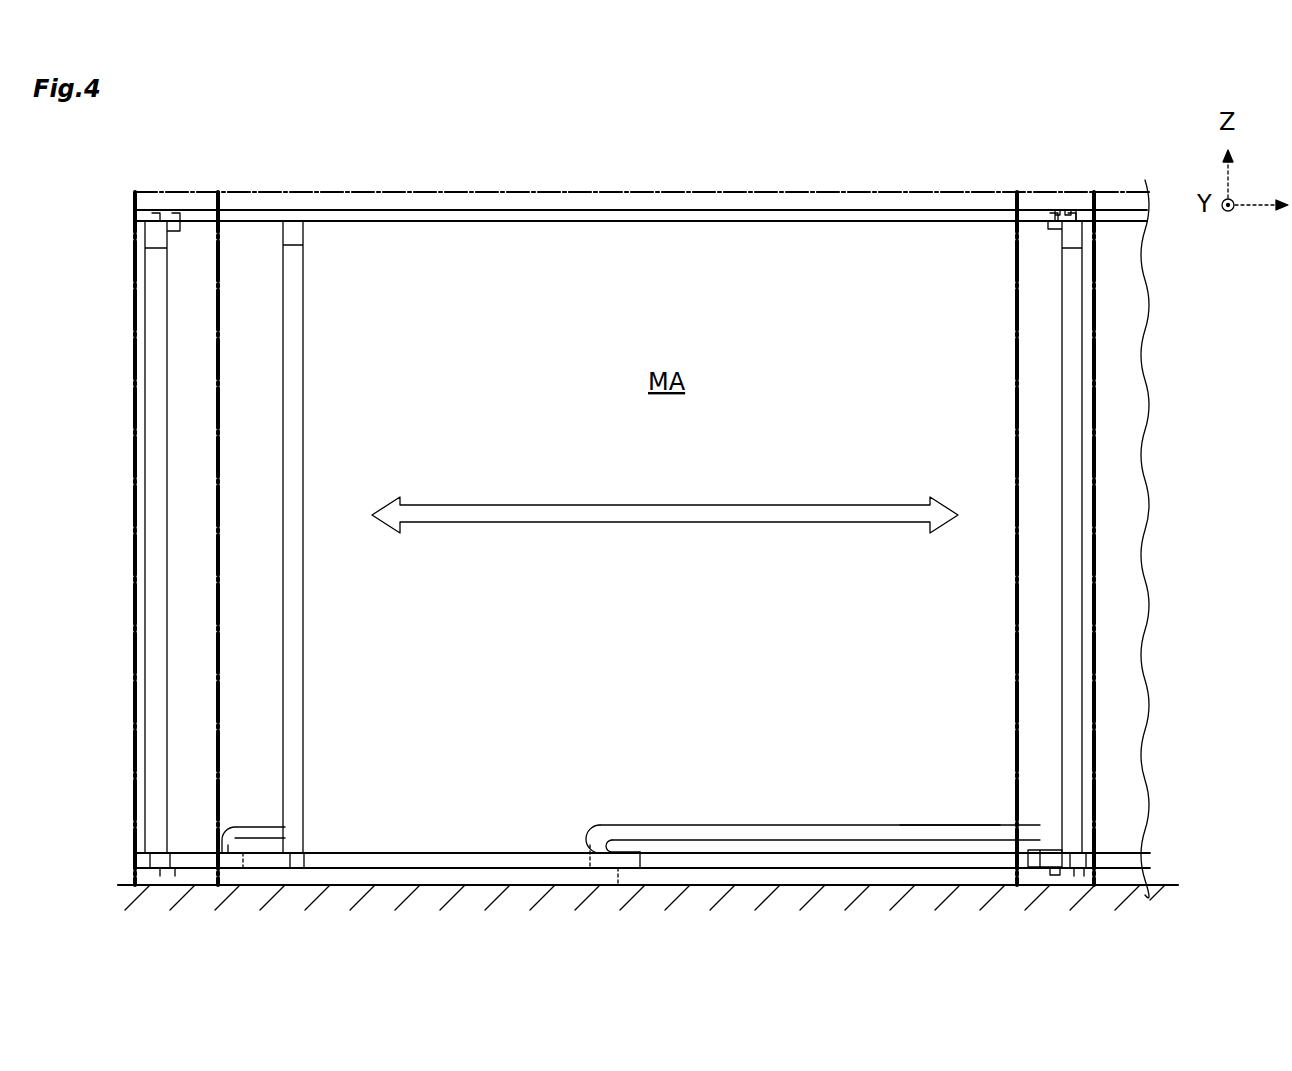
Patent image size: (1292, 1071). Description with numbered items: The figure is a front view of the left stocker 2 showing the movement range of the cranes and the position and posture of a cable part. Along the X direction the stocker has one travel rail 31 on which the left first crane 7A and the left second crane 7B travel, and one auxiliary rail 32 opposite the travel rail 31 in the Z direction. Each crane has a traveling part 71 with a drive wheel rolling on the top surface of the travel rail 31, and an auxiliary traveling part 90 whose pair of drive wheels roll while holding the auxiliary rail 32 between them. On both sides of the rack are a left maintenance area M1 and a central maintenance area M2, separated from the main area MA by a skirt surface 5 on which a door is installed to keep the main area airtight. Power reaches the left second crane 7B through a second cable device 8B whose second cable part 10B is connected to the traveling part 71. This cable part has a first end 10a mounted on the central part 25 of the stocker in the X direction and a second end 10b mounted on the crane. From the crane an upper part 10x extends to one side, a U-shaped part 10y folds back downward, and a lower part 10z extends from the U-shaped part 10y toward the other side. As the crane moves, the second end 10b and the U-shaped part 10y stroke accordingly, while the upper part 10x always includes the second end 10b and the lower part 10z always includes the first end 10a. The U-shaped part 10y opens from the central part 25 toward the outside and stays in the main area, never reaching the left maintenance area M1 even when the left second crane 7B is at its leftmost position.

The left stocker 2 is at (862, 186).
The auxiliary rail 32 is at (774, 210).
The travel rail 31 is at (860, 870).
The auxiliary traveling part 90 is at (1072, 212).
The left first stacker crane 7A is at (133, 822).
The left second stacker crane 7B is at (312, 793).
The skirt surface 5 is at (222, 412).
The left maintenance area M1 is at (186, 322).
The central maintenance area M2 is at (1044, 321).
The upper part 10x is at (718, 828).
The U-shaped part 10y is at (592, 846).
The lower part 10z is at (616, 871).
The first end 10a is at (630, 870).
The second end 10b is at (272, 838).
The second cable part 10B is at (412, 852).
The central part 25 is at (607, 812).
The second cable device 8B is at (903, 810).
The traveling part 71 is at (1060, 870).